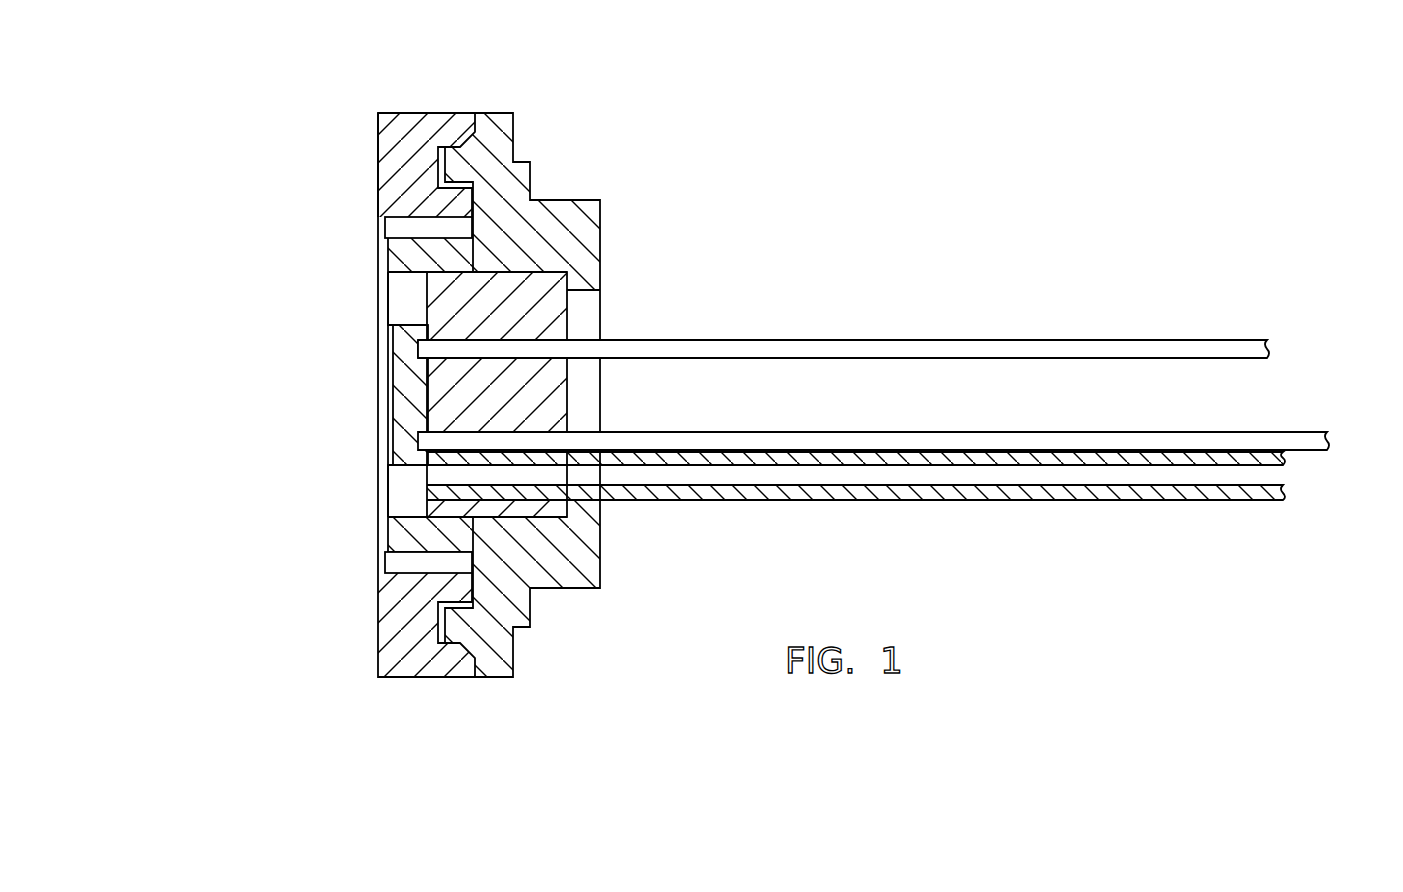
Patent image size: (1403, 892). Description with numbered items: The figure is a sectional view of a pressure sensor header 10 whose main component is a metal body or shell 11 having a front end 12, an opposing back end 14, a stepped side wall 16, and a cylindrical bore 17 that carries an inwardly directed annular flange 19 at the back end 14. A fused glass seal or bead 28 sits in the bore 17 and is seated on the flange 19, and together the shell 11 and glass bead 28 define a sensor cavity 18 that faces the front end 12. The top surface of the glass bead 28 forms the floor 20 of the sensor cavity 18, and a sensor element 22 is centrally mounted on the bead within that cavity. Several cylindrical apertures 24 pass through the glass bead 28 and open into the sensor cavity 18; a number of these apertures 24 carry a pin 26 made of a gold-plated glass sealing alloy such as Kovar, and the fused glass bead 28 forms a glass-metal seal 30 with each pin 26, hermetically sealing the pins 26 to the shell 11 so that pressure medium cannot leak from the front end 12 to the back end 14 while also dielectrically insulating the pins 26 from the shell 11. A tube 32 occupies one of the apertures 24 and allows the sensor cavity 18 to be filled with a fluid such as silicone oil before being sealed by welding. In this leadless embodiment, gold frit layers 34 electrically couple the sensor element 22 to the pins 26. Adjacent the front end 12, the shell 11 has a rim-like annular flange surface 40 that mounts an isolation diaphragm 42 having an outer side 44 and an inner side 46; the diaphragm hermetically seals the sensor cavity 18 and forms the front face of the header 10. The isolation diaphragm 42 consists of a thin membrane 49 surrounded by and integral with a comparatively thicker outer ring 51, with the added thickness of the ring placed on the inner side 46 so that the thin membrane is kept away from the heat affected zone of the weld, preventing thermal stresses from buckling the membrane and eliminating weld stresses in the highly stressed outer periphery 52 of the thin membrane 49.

The pressure sensor header 10 is at (800, 361).
The body or shell 11 is at (531, 182).
The front end 12 is at (350, 397).
The back end 14 is at (742, 395).
The stepped side wall 16 is at (518, 627).
The cylindrical bore 17 is at (390, 292).
The sensor cavity 18 is at (412, 505).
The inwardly directed annular flange 19 is at (600, 292).
The floor 20 is at (423, 303).
The sensor element 22 is at (410, 423).
The cylindrical apertures 24 is at (533, 340).
The pins 26 is at (958, 340).
The fused glass seal or bead 28 is at (533, 402).
The glass-metal seal 30 is at (475, 430).
The tube 32 is at (945, 502).
The gold frit layers 34 is at (425, 355).
The annular flange surface 40 is at (485, 113).
The isolation diaphragm 42 is at (378, 147).
The outer side 44 is at (378, 199).
The inner side 46 is at (381, 262).
The thin membrane 49 is at (382, 452).
The outer ring 51 is at (412, 147).
The outer periphery 52 is at (392, 567).